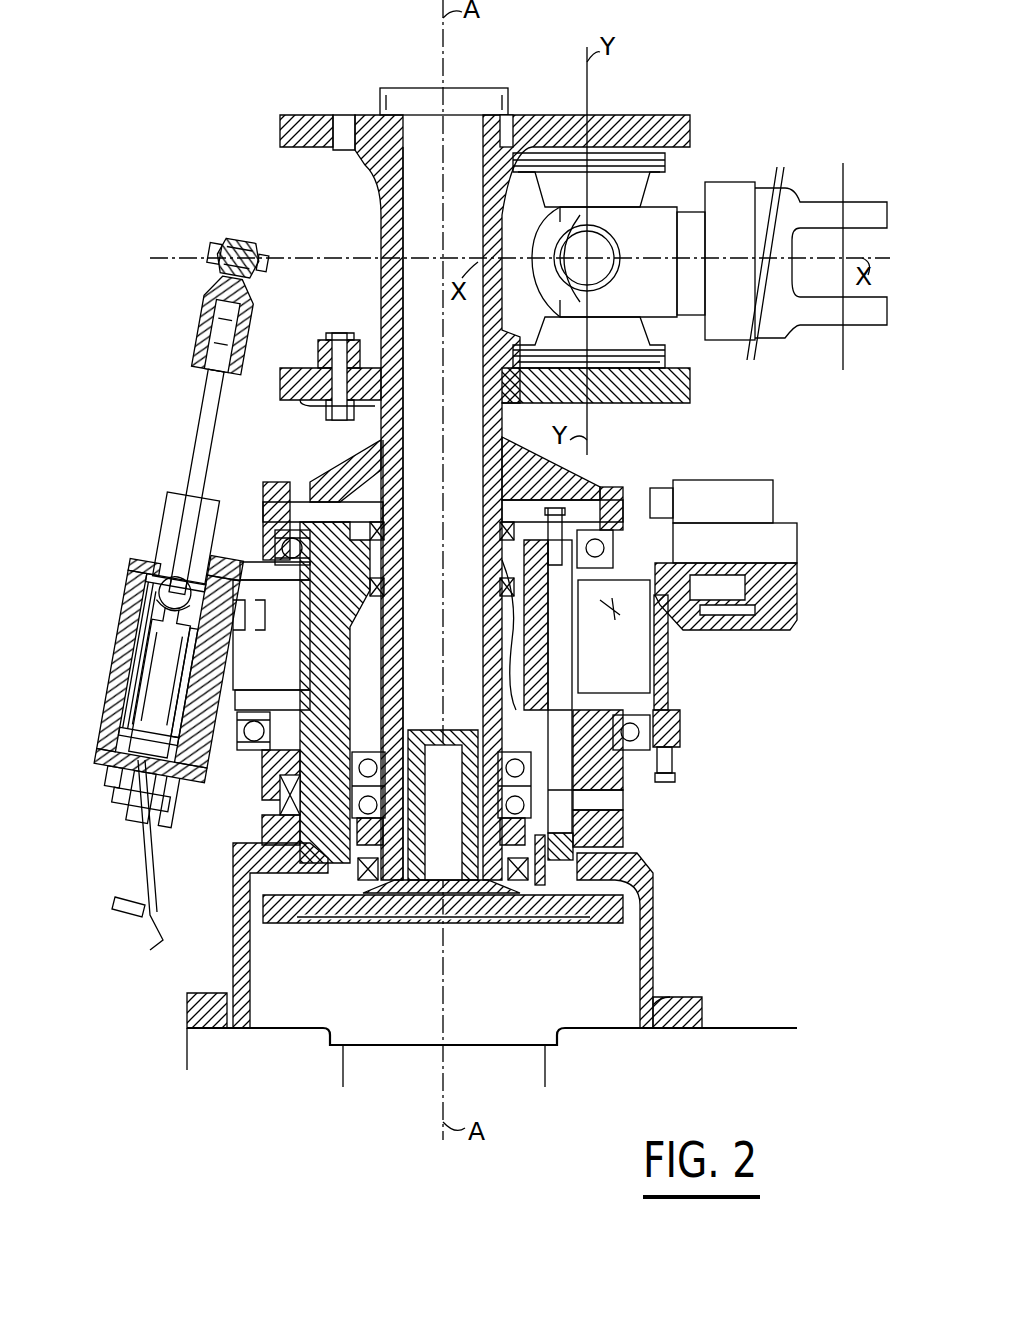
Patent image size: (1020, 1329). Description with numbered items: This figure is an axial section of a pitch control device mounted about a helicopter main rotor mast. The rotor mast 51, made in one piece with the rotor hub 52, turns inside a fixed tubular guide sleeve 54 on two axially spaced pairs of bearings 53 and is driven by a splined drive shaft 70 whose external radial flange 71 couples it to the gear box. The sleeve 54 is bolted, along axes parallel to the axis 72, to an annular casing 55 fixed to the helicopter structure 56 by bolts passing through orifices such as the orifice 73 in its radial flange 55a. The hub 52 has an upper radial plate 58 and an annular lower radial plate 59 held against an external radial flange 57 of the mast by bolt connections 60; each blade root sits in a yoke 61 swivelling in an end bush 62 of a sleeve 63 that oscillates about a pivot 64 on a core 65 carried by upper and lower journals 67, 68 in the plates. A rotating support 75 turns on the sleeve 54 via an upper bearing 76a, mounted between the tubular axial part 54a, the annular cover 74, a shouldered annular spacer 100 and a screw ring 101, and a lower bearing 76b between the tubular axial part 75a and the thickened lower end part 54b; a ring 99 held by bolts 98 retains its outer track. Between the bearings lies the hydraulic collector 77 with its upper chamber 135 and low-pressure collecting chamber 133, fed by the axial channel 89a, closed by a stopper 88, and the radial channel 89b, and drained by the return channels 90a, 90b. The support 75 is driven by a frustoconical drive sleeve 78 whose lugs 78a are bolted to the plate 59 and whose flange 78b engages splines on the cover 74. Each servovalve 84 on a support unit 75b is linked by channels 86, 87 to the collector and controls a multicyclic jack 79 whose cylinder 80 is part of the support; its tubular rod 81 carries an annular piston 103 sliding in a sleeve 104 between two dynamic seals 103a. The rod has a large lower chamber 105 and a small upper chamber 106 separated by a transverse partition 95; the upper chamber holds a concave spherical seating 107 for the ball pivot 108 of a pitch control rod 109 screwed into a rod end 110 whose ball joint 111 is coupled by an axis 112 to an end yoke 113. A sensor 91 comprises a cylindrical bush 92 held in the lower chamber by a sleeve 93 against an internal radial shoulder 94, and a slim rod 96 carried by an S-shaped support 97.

The rotor mast 51 is at (395, 643).
The rotor hub 52 is at (383, 188).
The bearings 53 is at (484, 553).
The fixed tubular guide sleeve 54 is at (625, 830).
The tubular axial part 54a is at (505, 617).
The thickened lower end part 54b is at (620, 790).
The annular casing 55 is at (648, 955).
The radial flange 55a is at (690, 1002).
The structure of the helicopter 56 is at (290, 1028).
The external radial flange 57 is at (325, 347).
The upper radial plate 58 is at (624, 128).
The lower radial plate 59 is at (668, 405).
The bolt connection 60 is at (340, 345).
The external radial yoke 61 is at (860, 215).
The external radial end bush 62 is at (720, 335).
The sleeve 63 is at (688, 230).
The pivot 64 is at (603, 255).
The core 65 is at (540, 225).
The upper journal 67 is at (615, 205).
The lower journal 68 is at (625, 332).
The drive shaft 70 is at (465, 905).
The external radial flange 71 is at (540, 905).
The axis 72 is at (640, 878).
The orifice 73 is at (210, 1000).
The annular cover 74 is at (270, 520).
The rotating support 75 is at (690, 640).
The tubular axial part 75a is at (230, 668).
The support unit 75b is at (797, 590).
The upper bearing 76a is at (610, 545).
The lower bearing 76b is at (655, 735).
The hydraulic collector 77 is at (620, 568).
The drive sleeve 78 is at (342, 466).
The external radial lug 78a is at (318, 408).
The external radial flange 78b is at (605, 490).
The multicyclic jack 79 is at (135, 560).
The cylinder 80 is at (115, 685).
The rod 81 is at (160, 535).
The servovalve 84 is at (755, 490).
The channel 86 is at (672, 563).
The channel 87 is at (720, 630).
The closing stopper 88 is at (567, 905).
The axial channel 89a is at (550, 693).
The radial channel 89b is at (625, 815).
The axial channel 90a is at (270, 770).
The radial channel 90b is at (265, 815).
The sensor 91 is at (110, 845).
The cylindrical bush 92 is at (128, 762).
The sleeve 93 is at (172, 788).
The internal radial shoulder 94 is at (140, 777).
The transverse partition 95 is at (190, 620).
The rod 96 is at (115, 900).
The S-shaped support 97 is at (142, 918).
The bolts 98 is at (672, 778).
The ring 99 is at (670, 760).
The shouldered annular spacer 100 is at (340, 522).
The screw ring 101 is at (540, 540).
The annular piston 103 is at (130, 650).
The dynamic seals 103a is at (130, 578).
The sleeve 104 is at (112, 710).
The large lower chamber 105 is at (122, 802).
The small upper chamber 106 is at (178, 507).
The concave spherical seating 107 is at (180, 625).
The ball pivot 108 is at (162, 595).
The pitch control rod 109 is at (205, 413).
The rod end 110 is at (205, 335).
The ball joint 111 is at (237, 240).
The axis 112 is at (262, 258).
The end yoke 113 is at (212, 247).
The low-pressure collecting chamber 133 is at (330, 665).
The upper chamber 135 is at (265, 560).